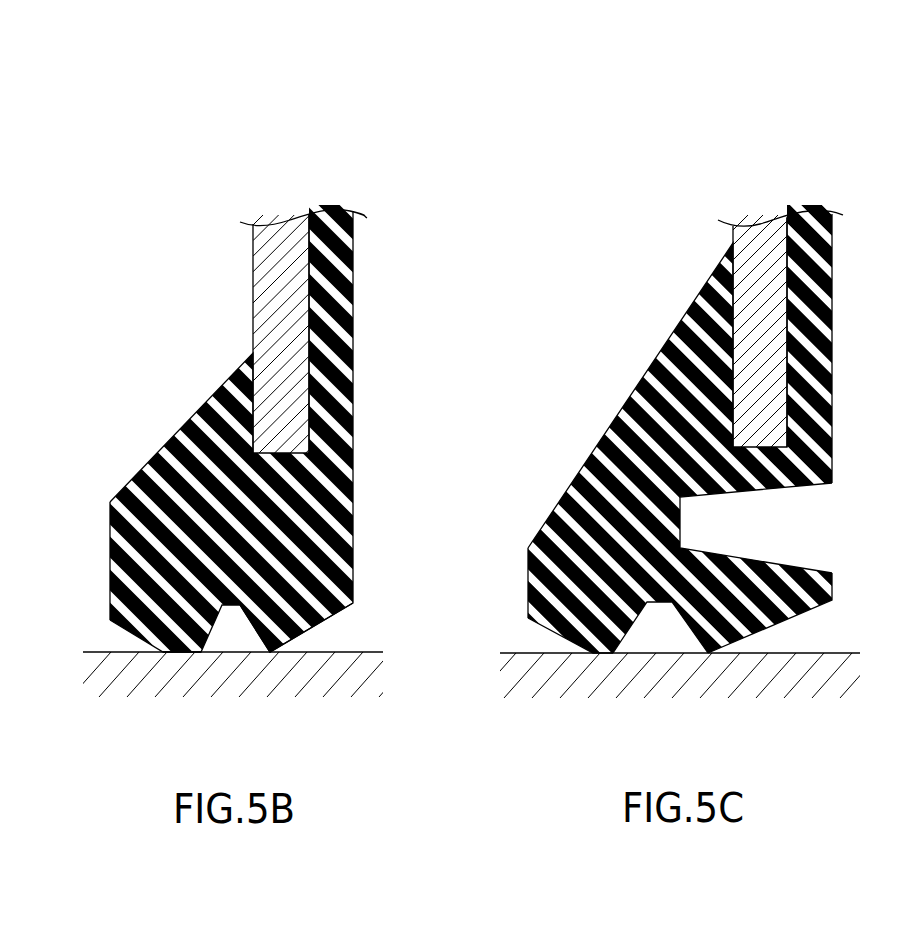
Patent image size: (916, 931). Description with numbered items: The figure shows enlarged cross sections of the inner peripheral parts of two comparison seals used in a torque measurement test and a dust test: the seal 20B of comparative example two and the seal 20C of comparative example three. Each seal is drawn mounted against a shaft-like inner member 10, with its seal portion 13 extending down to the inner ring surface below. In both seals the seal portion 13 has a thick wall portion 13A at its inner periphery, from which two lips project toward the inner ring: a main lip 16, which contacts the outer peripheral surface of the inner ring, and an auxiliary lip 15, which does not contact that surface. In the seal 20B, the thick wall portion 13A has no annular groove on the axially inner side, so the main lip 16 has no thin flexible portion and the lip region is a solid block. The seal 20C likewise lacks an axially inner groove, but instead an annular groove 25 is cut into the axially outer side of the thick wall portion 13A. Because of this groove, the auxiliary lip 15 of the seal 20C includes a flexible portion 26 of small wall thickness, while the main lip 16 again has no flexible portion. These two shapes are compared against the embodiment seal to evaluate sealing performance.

In FIG. 5B, the seal 20B is at (336, 190).
In FIG. 5C, the seal 20C is at (815, 190).
In FIG. 5B, the shaft 10 is at (262, 289).
In FIG. 5C, the shaft 10 is at (745, 245).
In FIG. 5B, the seal portion 13 is at (345, 528).
In FIG. 5C, the seal portion 13 is at (822, 440).
In FIG. 5B, the thick wall portion 13A is at (122, 540).
In FIG. 5C, the thick wall portion 13A is at (540, 577).
In FIG. 5B, the auxiliary lip 15 is at (281, 622).
In FIG. 5C, the auxiliary lip 15 is at (718, 618).
In FIG. 5B, the main lip 16 is at (165, 625).
In FIG. 5C, the main lip 16 is at (590, 630).
In FIG. 5C, the annular groove 25 is at (765, 530).
In FIG. 5C, the flexible portion 26 is at (662, 602).